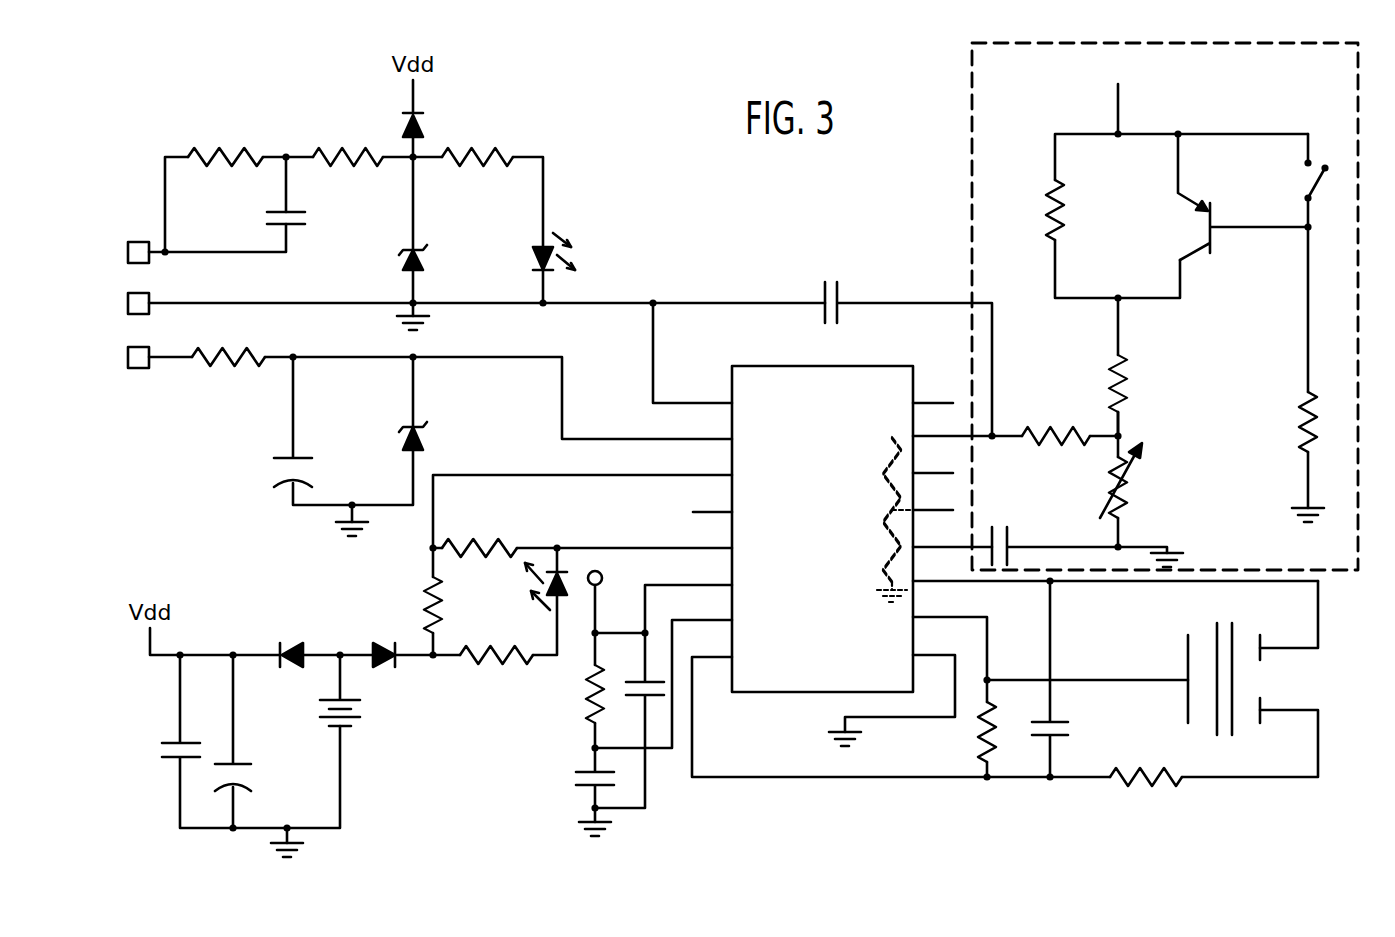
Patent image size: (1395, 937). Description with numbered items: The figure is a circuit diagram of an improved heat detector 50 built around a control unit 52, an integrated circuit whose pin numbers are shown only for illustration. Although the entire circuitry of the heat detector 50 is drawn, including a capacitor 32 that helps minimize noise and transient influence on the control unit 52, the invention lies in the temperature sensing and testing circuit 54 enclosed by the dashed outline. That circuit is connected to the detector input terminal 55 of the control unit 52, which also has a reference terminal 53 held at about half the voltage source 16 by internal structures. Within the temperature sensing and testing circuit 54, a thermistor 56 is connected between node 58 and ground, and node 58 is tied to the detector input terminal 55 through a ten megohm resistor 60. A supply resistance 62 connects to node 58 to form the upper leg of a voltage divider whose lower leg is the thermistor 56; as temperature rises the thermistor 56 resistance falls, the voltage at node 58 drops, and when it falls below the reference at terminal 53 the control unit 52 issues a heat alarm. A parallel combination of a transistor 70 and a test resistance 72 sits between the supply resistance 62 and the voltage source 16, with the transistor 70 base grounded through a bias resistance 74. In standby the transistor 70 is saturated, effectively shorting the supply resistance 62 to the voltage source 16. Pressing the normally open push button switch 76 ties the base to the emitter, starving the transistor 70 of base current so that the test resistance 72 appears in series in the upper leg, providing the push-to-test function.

The voltage source 16 is at (1139, 73).
The capacitor 32 is at (840, 292).
The heat detector 50 is at (671, 248).
The control unit 52 is at (835, 377).
The reference terminal 53 is at (935, 510).
The temperature sensing and testing circuit 54 is at (972, 96).
The detector input terminal 55 is at (930, 436).
The thermistor 56 is at (1130, 485).
The node 58 is at (1126, 436).
The resistor 60 is at (1034, 428).
The supply resistance 62 is at (1126, 372).
The transistor 70 is at (1212, 215).
The test resistance 72 is at (1062, 196).
The bias resistance 74 is at (1301, 425).
The push button switch 76 is at (1303, 184).